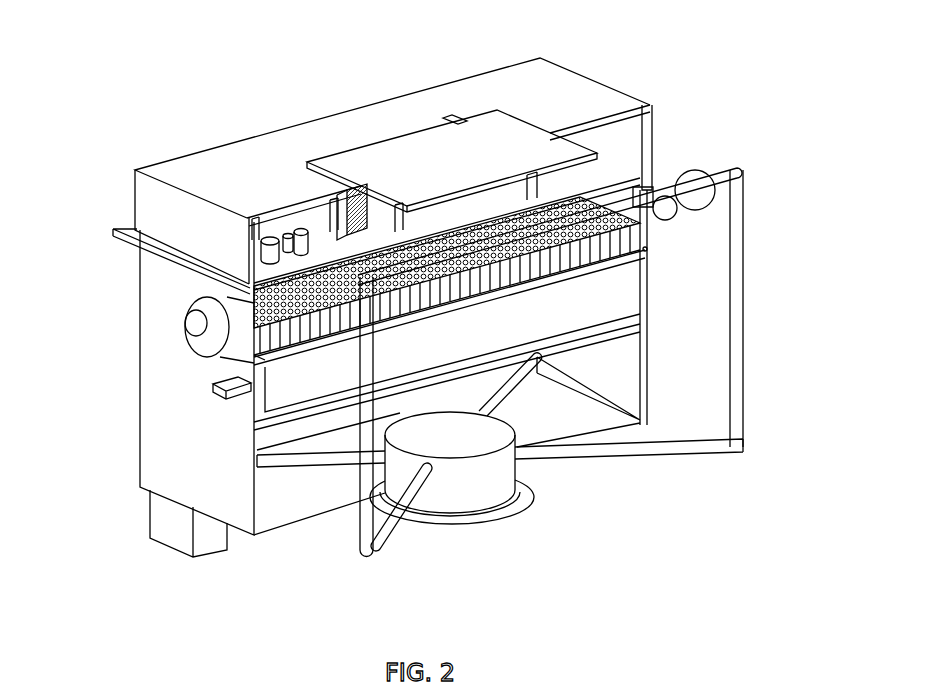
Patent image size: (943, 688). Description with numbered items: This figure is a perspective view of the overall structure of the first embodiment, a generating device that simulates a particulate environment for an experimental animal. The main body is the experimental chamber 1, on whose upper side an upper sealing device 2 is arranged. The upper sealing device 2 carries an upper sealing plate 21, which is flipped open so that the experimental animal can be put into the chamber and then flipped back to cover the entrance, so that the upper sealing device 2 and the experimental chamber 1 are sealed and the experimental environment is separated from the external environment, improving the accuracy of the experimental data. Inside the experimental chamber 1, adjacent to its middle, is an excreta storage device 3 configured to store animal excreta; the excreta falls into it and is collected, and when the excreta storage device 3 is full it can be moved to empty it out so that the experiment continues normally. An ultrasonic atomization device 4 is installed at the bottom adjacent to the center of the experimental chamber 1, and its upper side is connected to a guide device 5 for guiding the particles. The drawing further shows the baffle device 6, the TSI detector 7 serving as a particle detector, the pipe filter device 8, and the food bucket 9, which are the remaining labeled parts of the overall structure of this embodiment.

The experimental chamber 1 is at (213, 485).
The upper sealing device 2 is at (558, 93).
The upper sealing plate 21 is at (413, 150).
The excreta storage device 3 is at (213, 390).
The ultrasonic atomization device 4 is at (487, 517).
The guide device 5 is at (673, 453).
The baffle device 6 is at (648, 257).
The TSI detector 7 is at (307, 163).
The pipe filter device 8 is at (203, 320).
The food bucket 9 is at (152, 203).